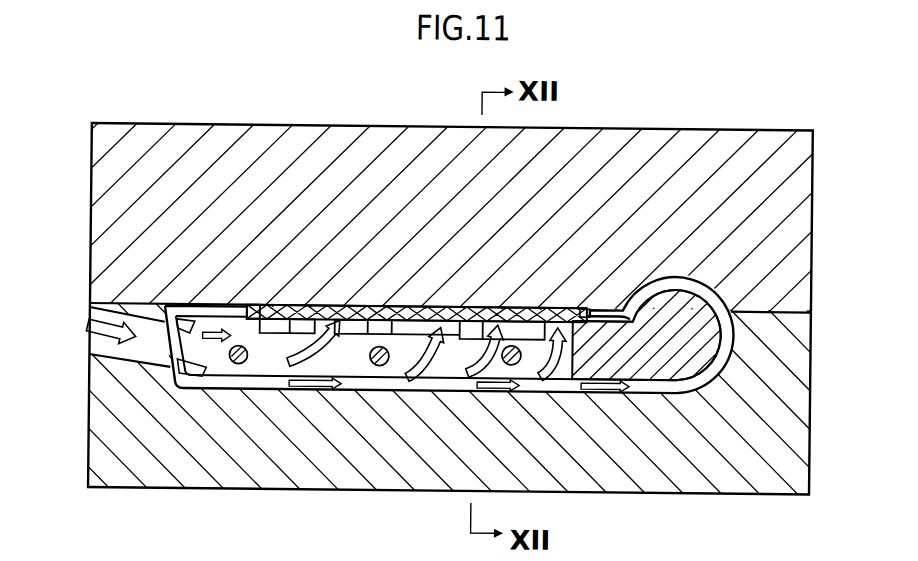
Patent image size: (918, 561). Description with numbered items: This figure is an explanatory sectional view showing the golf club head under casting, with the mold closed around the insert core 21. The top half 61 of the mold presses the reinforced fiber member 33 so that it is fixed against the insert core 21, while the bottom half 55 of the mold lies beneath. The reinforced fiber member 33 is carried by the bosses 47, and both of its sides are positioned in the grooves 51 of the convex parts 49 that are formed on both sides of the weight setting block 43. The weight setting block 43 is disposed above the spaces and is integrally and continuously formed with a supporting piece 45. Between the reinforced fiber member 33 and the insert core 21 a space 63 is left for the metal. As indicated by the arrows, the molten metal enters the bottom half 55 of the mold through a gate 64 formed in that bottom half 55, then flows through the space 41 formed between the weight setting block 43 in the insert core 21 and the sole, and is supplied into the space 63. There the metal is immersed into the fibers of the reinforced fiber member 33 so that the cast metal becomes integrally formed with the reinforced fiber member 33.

The top half of the mold 61 is at (730, 136).
The bottom half of the mold 55 is at (773, 400).
The insert core 21 is at (703, 334).
The convex parts 49 is at (238, 302).
The grooves 51 is at (254, 302).
The bosses 47 is at (300, 302).
The reinforced fiber member 33 is at (347, 302).
The space 63 is at (515, 302).
The weight setting block 43 is at (270, 358).
The space 41 is at (441, 366).
The supporting piece 45 is at (240, 363).
The gate 64 is at (90, 332).